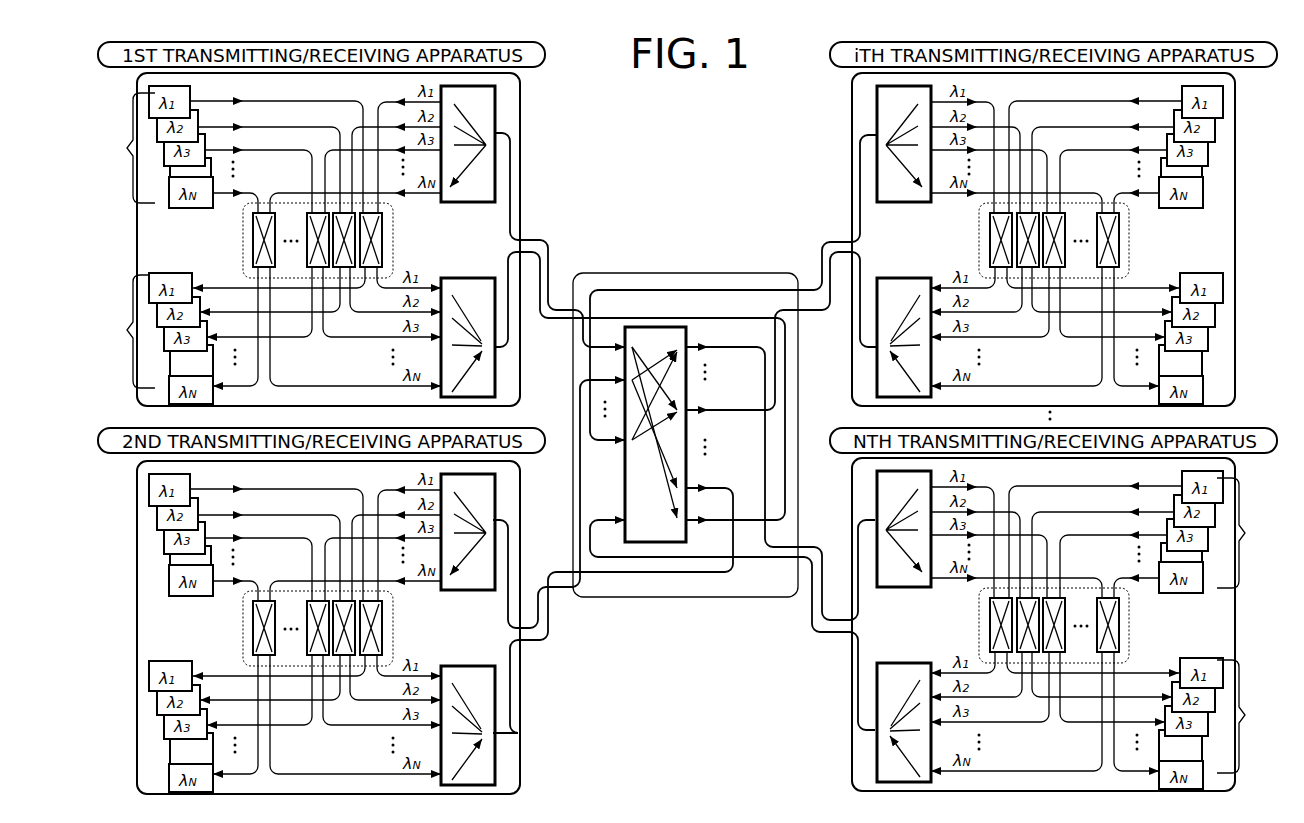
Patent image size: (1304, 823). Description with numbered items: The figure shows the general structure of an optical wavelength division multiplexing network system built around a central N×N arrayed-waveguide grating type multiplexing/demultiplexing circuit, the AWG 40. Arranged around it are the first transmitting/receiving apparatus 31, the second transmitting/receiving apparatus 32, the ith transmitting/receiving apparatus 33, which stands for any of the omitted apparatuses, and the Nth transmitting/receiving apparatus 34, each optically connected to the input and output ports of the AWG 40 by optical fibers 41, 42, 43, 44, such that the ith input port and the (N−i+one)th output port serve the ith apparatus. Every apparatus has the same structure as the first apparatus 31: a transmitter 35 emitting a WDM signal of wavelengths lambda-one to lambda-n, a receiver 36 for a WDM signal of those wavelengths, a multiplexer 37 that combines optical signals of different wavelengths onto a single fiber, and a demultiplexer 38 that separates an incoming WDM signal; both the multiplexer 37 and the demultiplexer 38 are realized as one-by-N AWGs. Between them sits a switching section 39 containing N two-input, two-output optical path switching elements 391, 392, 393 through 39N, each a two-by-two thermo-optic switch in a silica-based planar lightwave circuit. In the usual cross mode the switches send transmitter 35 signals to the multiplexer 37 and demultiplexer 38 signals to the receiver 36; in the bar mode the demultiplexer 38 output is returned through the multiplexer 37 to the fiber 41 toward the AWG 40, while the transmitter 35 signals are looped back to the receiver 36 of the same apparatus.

The 1st transmitting/receiving apparatus 31 is at (520, 78).
The 2nd transmitting/receiving apparatus 32 is at (518, 757).
The ith transmitting/receiving apparatus 33 is at (852, 128).
The Nth transmitting/receiving apparatus 34 is at (848, 752).
The transmitter 35 is at (229, 237).
The receiver 36 is at (154, 338).
The multiplexer 37 is at (495, 380).
The demultiplexer 38 is at (495, 103).
The switching section 39 is at (387, 277).
The optical path switching element 391 is at (382, 240).
The optical path switching element 392 is at (358, 268).
The optical path switching element 393 is at (303, 268).
The optical path switching element 39N is at (253, 243).
The arrayed-waveguide grating type multiplexing/demultiplexing circuit (AWG) 40 is at (660, 327).
The optical fiber 41 is at (548, 255).
The optical fiber 42 is at (538, 640).
The optical fiber 43 is at (842, 240).
The optical fiber 44 is at (835, 632).